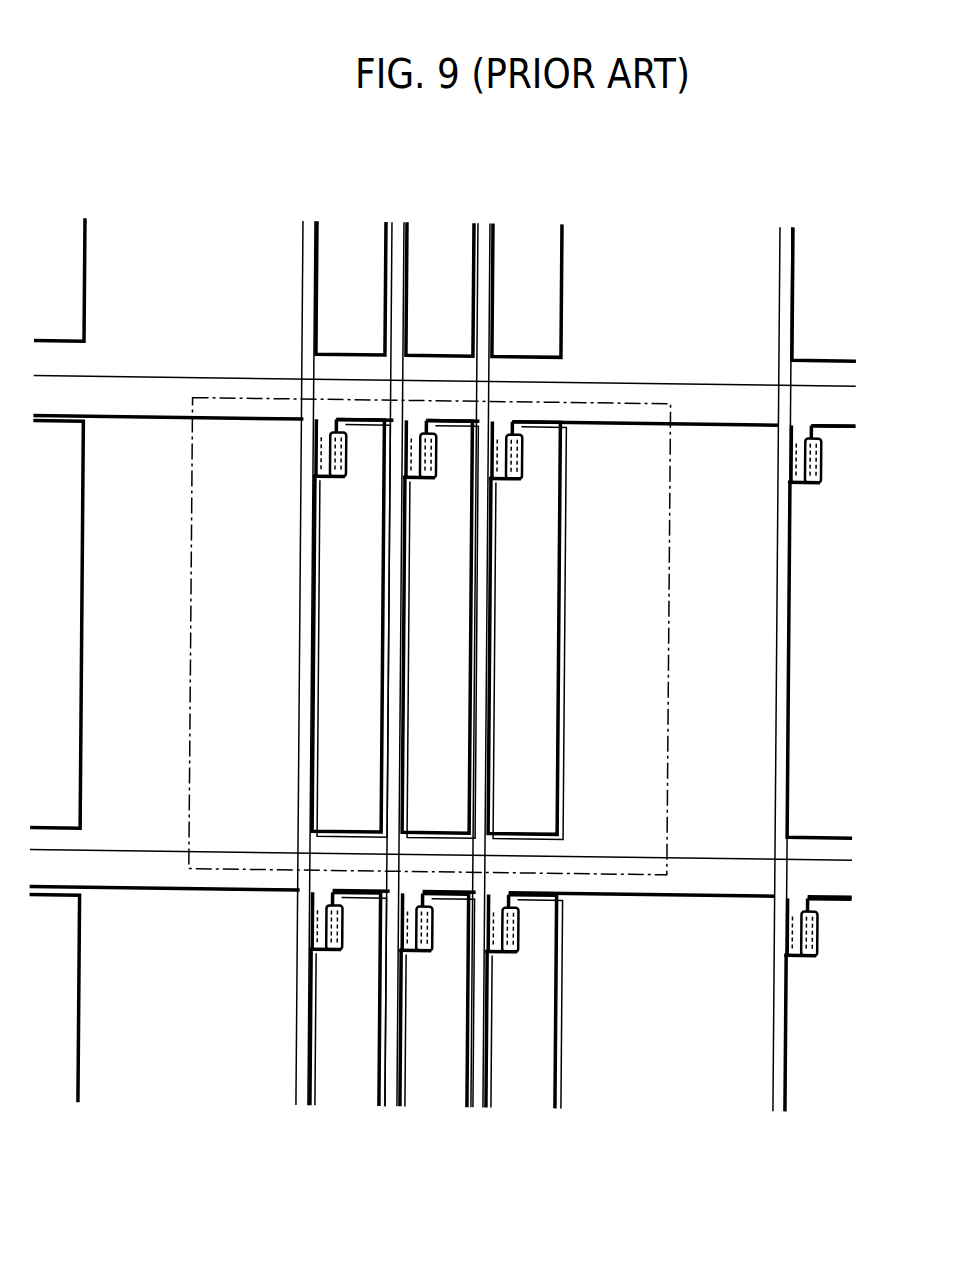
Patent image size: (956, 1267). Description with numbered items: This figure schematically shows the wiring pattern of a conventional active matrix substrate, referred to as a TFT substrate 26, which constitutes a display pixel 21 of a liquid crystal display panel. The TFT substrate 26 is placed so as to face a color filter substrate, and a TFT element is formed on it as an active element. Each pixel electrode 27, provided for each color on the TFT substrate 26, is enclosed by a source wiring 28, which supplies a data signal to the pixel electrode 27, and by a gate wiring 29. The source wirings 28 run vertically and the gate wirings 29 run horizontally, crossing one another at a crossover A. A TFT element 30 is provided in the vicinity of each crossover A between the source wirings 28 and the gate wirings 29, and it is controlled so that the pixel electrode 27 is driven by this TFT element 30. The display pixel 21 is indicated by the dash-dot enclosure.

The display pixel 21 is at (214, 397).
The active matrix substrate 26 is at (717, 206).
The pixel electrode 27 is at (515, 636).
The source wiring 28 is at (302, 243).
The gate wiring 29 is at (692, 385).
The TFT element 30 is at (329, 416).
The crossover A is at (412, 372).